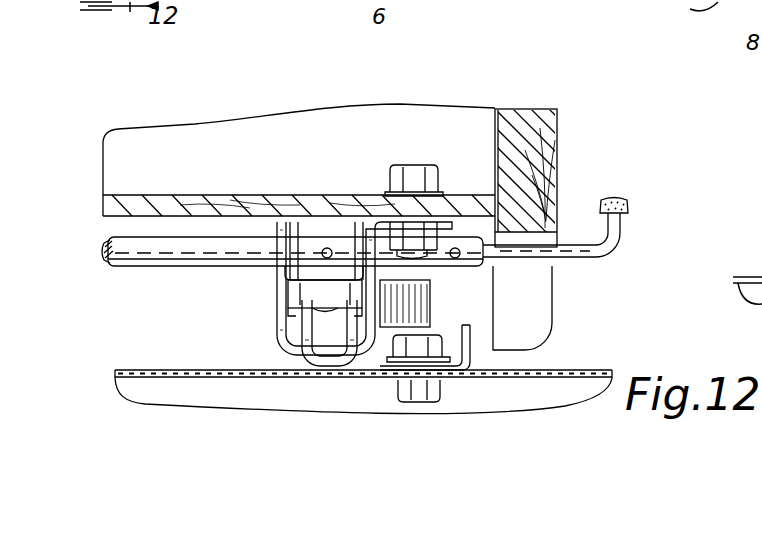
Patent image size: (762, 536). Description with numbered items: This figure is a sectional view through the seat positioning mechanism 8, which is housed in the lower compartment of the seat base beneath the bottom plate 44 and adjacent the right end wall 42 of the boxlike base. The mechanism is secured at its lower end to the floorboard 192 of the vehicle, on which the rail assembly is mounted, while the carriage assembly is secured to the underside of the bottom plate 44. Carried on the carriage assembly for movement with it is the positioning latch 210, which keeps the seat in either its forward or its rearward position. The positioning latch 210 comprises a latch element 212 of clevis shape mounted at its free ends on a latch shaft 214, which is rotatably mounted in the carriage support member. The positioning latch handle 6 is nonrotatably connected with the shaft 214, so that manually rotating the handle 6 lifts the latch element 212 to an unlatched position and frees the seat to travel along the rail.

The positioning latch handle 6 is at (602, 232).
The positioning mechanism 8 is at (192, 138).
The right end wall 42 is at (557, 125).
The bottom plate 44 is at (209, 210).
The floorboard 192 is at (578, 371).
The positioning latch 210 is at (270, 308).
The latch element 212 is at (292, 270).
The latch shaft 214 is at (440, 258).